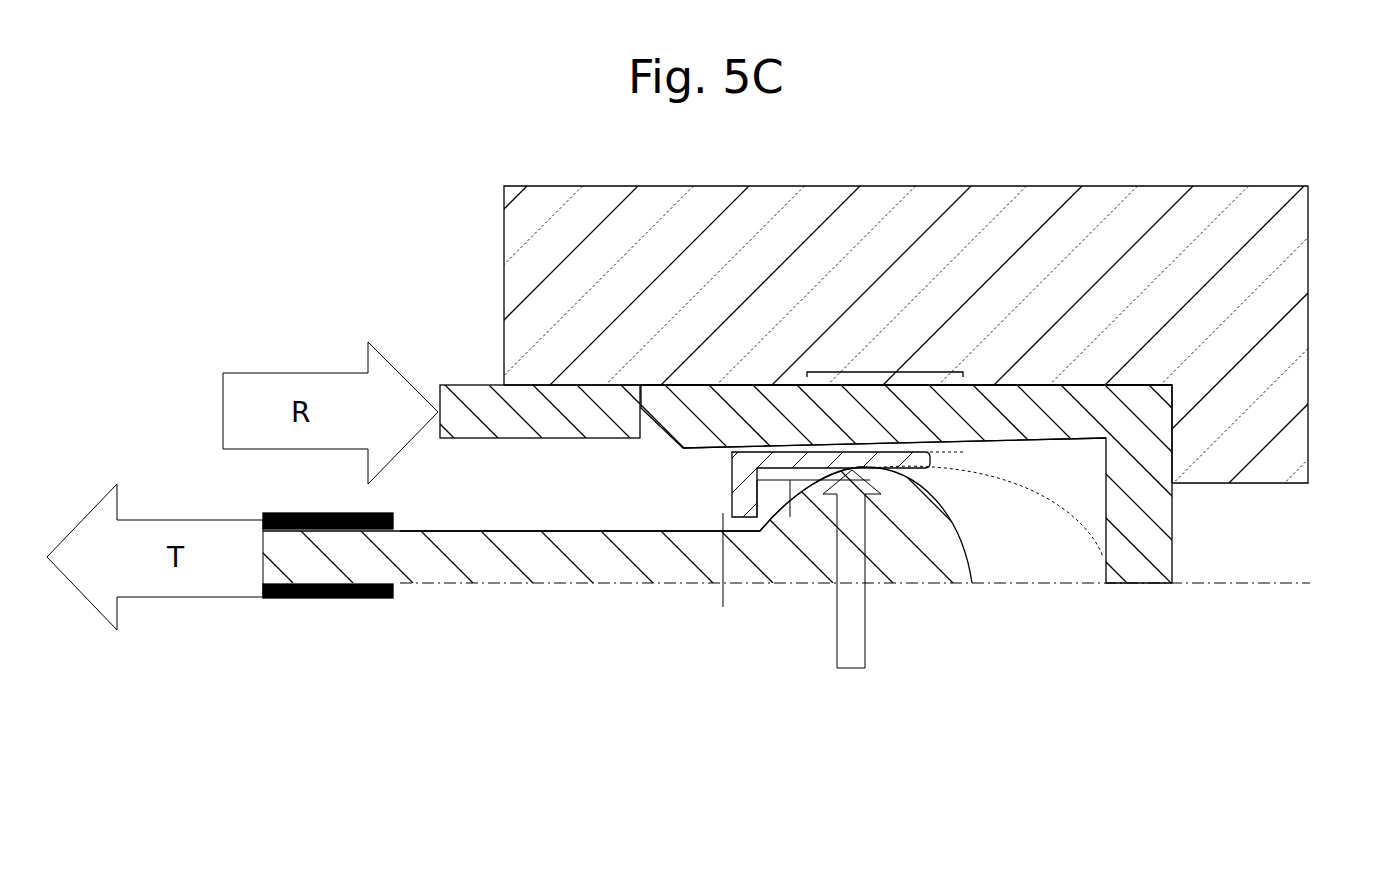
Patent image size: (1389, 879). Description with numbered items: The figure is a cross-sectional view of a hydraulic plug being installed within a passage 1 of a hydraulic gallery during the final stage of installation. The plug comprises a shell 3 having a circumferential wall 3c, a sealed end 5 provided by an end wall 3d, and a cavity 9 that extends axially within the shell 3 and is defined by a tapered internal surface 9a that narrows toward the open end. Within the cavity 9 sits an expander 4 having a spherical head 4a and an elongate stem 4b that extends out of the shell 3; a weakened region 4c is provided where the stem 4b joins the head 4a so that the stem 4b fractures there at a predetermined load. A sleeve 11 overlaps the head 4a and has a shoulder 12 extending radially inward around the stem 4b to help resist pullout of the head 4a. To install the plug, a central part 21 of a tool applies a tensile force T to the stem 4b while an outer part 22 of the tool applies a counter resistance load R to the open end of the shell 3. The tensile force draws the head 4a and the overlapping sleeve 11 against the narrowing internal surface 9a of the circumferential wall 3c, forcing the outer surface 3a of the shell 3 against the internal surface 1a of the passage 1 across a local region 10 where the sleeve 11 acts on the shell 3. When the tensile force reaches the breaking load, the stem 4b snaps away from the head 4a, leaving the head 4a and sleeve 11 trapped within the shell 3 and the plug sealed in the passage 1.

The passage 1 is at (1257, 550).
The internal surface of the passage 1a is at (990, 383).
The shell 3 is at (910, 413).
The outer surface of the shell 3a is at (990, 385).
The circumferential wall 3c is at (669, 410).
The end wall 3d is at (1172, 515).
The sealed end 5 is at (1139, 510).
The expander 4 is at (440, 565).
The head 4a is at (922, 547).
The stem 4b is at (473, 530).
The weakened region 4c is at (723, 567).
The cavity 9 is at (1072, 465).
The tapered internal surface 9a is at (975, 440).
The local region 10 is at (900, 367).
The sleeve 11 is at (873, 463).
The shoulder 12 is at (745, 457).
The central part of the tool 21 is at (317, 512).
The outer part of the tool 22 is at (483, 400).